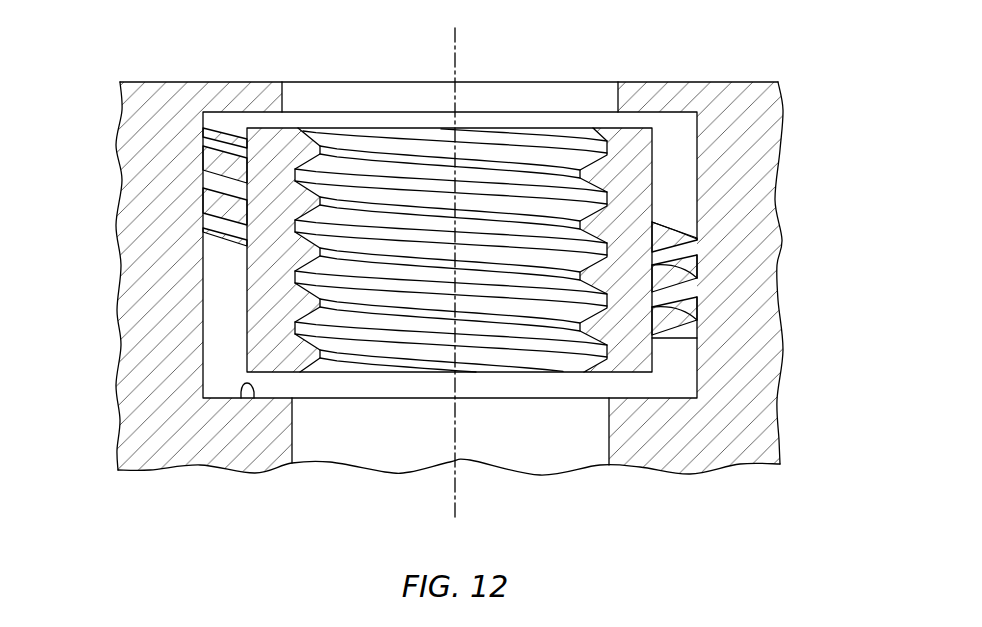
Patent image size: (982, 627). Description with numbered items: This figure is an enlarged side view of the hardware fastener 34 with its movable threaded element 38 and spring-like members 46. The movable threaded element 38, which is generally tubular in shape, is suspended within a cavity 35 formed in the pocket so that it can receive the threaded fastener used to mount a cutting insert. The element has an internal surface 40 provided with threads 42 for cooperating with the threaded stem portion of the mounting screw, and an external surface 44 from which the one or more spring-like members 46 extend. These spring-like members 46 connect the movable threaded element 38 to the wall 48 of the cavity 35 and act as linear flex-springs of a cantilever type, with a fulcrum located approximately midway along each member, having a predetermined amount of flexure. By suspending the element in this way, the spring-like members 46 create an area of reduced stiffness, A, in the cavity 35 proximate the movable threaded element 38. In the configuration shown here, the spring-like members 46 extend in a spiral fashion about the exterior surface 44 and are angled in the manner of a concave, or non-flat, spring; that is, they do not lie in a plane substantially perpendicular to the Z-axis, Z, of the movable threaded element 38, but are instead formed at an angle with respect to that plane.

The hardware fastener 34 is at (718, 125).
The cavity 35 is at (223, 380).
The movable threaded element 38 is at (244, 323).
The internal surface 40 is at (348, 235).
The threads 42 is at (331, 248).
The external surface 44 is at (246, 357).
The spring-like members 46 is at (210, 138).
The wall 48 is at (254, 398).
The area of reduced stiffness A is at (228, 121).
The Z-axis Z is at (457, 46).